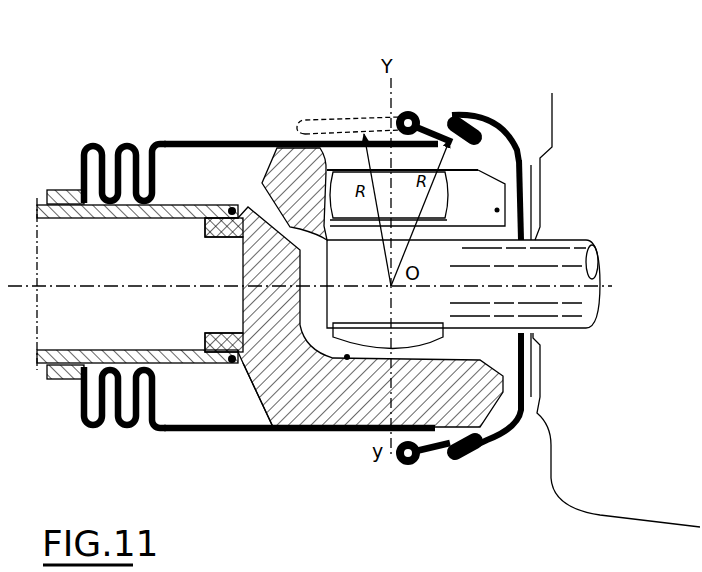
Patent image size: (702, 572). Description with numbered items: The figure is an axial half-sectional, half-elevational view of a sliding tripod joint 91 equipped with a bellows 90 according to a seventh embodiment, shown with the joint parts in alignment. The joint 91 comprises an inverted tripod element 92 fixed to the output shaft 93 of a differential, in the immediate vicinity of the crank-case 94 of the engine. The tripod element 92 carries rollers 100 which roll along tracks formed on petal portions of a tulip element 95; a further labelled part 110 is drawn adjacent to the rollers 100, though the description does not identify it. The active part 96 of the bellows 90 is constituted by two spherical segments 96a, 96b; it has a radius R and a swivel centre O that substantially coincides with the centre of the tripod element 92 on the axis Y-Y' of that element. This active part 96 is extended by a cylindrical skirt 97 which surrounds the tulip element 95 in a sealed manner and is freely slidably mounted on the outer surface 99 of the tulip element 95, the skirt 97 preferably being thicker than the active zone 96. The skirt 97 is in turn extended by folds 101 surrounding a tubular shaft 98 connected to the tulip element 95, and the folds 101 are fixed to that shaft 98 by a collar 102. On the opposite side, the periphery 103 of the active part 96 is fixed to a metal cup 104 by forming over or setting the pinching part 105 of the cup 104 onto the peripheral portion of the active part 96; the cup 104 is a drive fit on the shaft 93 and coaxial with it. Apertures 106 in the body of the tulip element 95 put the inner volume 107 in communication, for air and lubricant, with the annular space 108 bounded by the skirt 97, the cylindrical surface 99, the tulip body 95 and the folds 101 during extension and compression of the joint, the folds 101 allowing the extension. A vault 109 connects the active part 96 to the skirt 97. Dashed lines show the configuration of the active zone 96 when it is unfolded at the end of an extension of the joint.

The bellows 90 is at (220, 437).
The sliding tripod joint 91 is at (241, 383).
The inverted tripod element 92 is at (343, 358).
The output shaft 93 is at (563, 252).
The crank-case 94 is at (537, 173).
The tulip element 95 is at (521, 196).
The active part 96 is at (429, 109).
The spherical segment 96a is at (452, 116).
The spherical segment 96b is at (397, 112).
The cylindrical skirt 97 is at (258, 136).
The tubular shaft 98 is at (192, 140).
The outer surface 99 is at (292, 128).
The rollers 100 is at (446, 189).
The folds 101 is at (93, 142).
The collar 102 is at (57, 188).
The periphery 103 is at (481, 124).
The cup 104 is at (527, 383).
The pinching part 105 is at (468, 453).
The apertures 106 is at (264, 198).
The inner volume 107 is at (260, 428).
The annular space 108 is at (203, 407).
The vault 109 is at (405, 452).
The retainer 110 is at (476, 198).